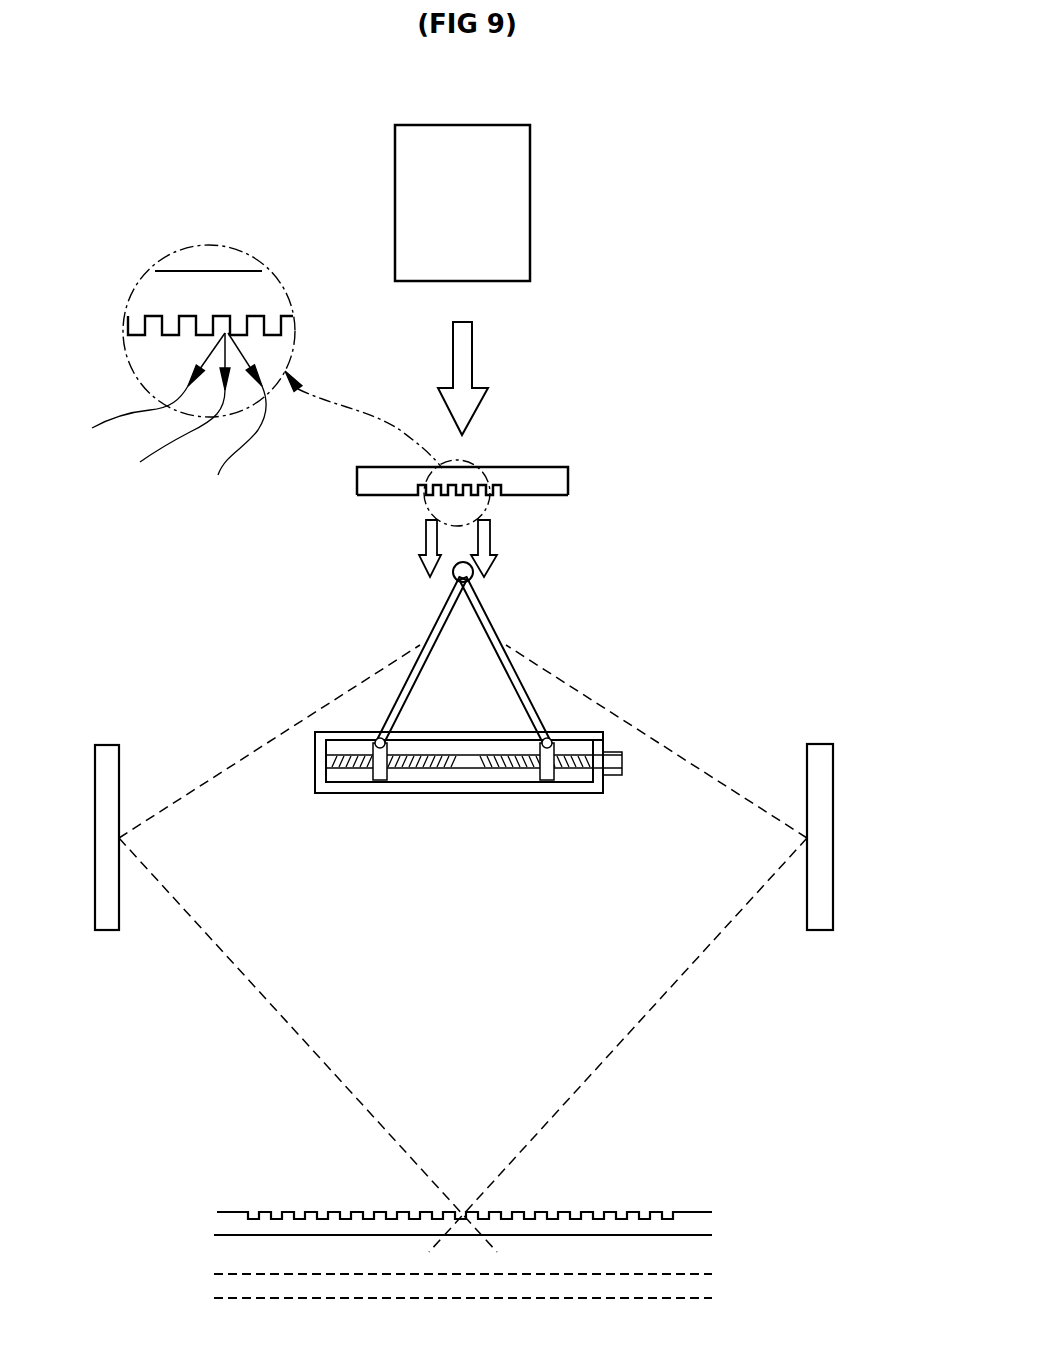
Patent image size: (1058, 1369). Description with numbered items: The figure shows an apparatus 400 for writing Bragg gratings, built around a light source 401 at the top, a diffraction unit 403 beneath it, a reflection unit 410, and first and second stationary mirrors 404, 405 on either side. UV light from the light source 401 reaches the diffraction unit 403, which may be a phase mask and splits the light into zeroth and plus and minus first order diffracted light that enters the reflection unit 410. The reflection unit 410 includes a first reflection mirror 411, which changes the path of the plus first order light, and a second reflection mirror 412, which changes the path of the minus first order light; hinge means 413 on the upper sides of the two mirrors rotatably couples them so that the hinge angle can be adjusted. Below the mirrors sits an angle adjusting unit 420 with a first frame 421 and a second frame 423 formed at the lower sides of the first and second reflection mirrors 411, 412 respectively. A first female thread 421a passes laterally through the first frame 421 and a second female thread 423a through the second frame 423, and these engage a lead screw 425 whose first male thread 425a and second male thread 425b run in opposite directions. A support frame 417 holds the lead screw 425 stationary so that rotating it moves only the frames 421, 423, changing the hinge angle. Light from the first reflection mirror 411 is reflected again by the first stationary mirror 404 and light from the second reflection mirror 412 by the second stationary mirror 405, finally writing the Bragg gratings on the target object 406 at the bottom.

The apparatus for writing Bragg gratings 400 is at (205, 162).
The light source 401 is at (512, 218).
The diffraction unit 403 is at (553, 473).
The first stationary mirror 404 is at (105, 762).
The second stationary mirror 405 is at (820, 760).
The target object 406 is at (690, 1212).
The reflection unit 410 is at (392, 632).
The first reflection mirror 411 is at (413, 670).
The second reflection mirror 412 is at (496, 622).
The hinge means 413 is at (473, 578).
The support frame 417 is at (600, 745).
The angle adjusting unit 420 is at (351, 804).
The first frame 421 is at (378, 738).
The first female thread 421a is at (323, 760).
The second frame 423 is at (552, 742).
The second female thread 423a is at (593, 797).
The lead screw 425 is at (512, 802).
The first male thread 425a is at (407, 777).
The second male thread 425b is at (525, 777).